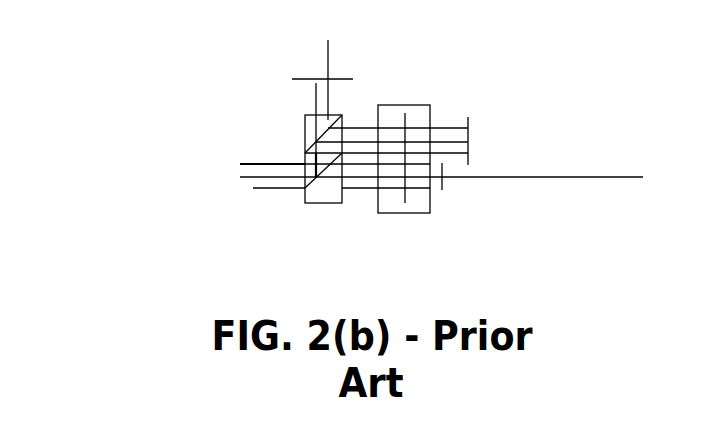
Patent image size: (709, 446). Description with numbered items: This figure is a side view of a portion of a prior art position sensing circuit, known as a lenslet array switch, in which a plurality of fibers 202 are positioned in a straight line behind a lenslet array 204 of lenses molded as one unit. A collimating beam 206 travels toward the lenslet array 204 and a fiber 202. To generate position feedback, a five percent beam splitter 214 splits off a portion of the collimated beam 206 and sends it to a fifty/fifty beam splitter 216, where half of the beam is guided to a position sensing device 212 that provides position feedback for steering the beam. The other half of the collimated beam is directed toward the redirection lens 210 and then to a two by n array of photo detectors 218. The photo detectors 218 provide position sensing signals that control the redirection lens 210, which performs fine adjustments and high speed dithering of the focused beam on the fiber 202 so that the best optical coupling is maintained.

The fibers 202 is at (465, 177).
The lenslet array 204 is at (467, 210).
The collimating beam 206 is at (212, 182).
The redirection lens 210 is at (412, 240).
The position sensing device 212 is at (322, 93).
The 5% beam splitter 214 is at (310, 231).
The 50/50 beam splitter 216 is at (274, 118).
The array of photo detectors 218 is at (508, 120).